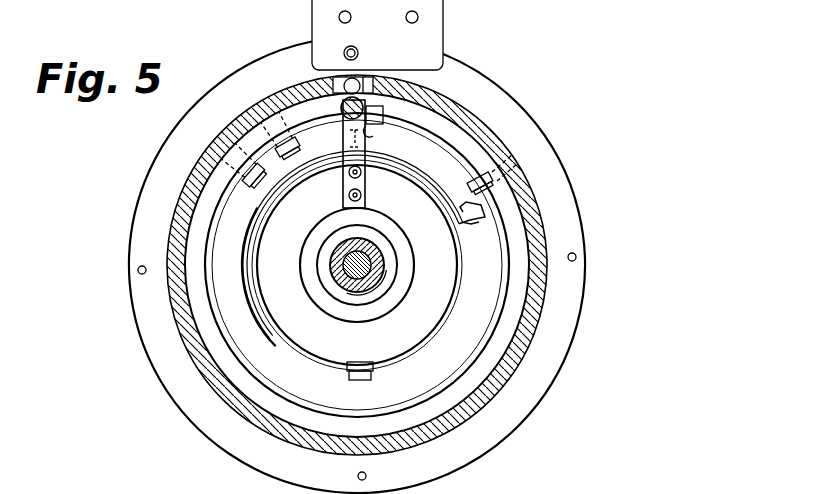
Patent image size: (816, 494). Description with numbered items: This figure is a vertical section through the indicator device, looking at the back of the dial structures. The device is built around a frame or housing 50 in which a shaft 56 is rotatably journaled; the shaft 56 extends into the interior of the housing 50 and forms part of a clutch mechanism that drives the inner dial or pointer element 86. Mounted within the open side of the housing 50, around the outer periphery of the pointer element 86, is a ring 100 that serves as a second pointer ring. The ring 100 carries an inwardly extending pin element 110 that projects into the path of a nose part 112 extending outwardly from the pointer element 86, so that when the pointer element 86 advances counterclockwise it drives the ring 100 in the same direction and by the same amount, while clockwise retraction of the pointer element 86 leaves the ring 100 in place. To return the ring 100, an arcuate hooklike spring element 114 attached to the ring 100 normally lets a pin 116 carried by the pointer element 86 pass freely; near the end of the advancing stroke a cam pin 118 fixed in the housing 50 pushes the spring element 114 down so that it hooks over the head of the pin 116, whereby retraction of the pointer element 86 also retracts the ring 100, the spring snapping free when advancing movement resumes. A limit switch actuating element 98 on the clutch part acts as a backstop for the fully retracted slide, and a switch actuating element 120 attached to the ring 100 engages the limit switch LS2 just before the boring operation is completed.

The housing 50 is at (473, 115).
The shaft 56 is at (378, 276).
The inner dial 86 is at (472, 259).
The limit switch actuating element 98 is at (341, 99).
The ring 100 is at (458, 366).
The pin element 110 is at (472, 188).
The nose part 112 is at (462, 216).
The arcuate hooklike spring element 114 is at (270, 105).
The pin 116 is at (373, 160).
The cam pin 118 is at (379, 128).
The switch actuating element 120 is at (343, 163).
The limit switch LS2 is at (443, 18).